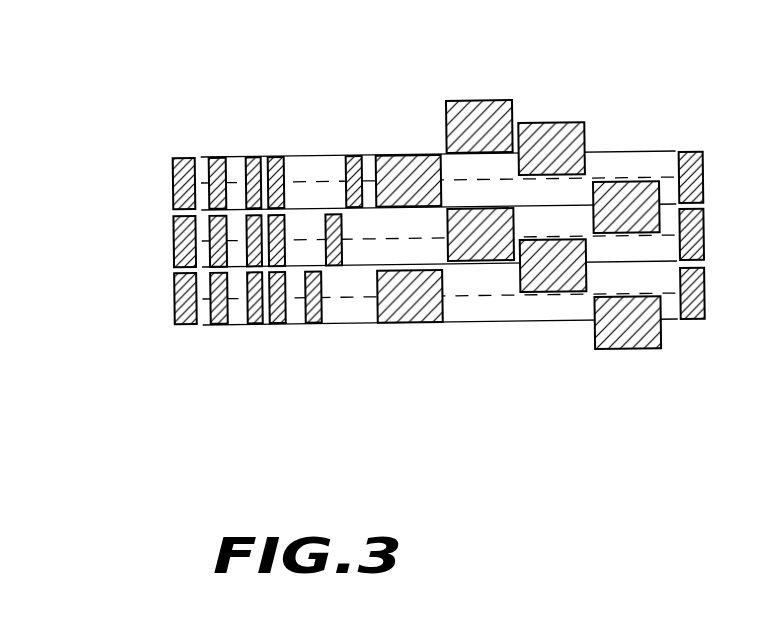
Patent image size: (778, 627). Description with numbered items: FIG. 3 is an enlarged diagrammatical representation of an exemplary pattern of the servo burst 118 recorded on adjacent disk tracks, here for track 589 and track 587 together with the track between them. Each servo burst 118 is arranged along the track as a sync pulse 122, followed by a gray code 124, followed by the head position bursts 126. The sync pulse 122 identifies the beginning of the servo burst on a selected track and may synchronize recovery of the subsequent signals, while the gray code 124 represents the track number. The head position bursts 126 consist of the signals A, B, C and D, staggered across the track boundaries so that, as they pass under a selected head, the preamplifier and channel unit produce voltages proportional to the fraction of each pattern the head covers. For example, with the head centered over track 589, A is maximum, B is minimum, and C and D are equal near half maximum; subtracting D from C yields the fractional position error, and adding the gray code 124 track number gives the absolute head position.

The servo burst 118 is at (686, 20).
The sync pulse 122 is at (185, 352).
The gray code 124 is at (297, 345).
The head position bursts 126 is at (551, 104).
The track 589 is at (145, 190).
The track 587 is at (150, 304).